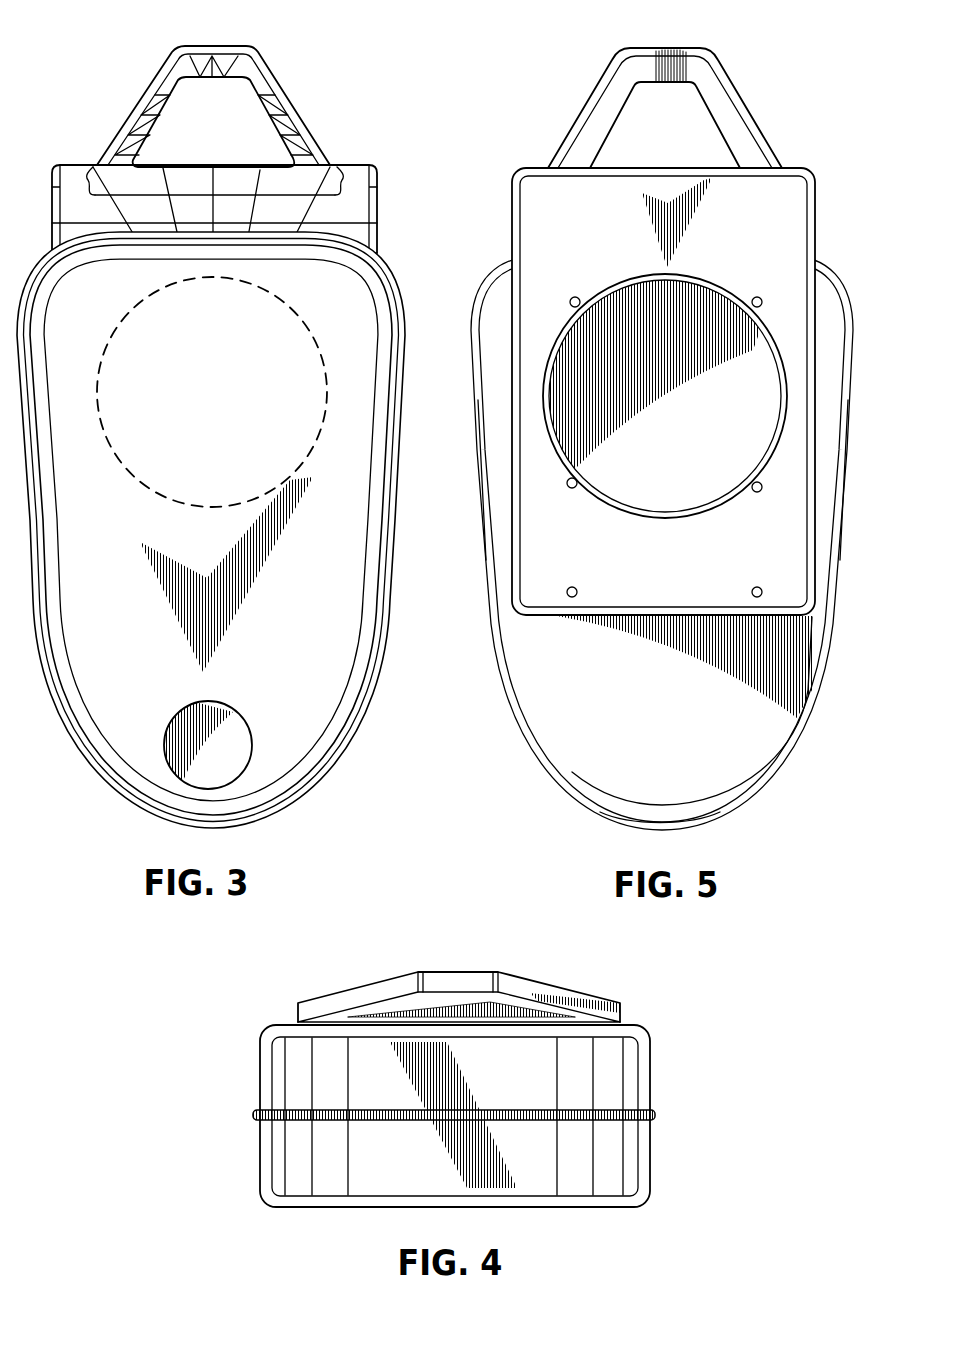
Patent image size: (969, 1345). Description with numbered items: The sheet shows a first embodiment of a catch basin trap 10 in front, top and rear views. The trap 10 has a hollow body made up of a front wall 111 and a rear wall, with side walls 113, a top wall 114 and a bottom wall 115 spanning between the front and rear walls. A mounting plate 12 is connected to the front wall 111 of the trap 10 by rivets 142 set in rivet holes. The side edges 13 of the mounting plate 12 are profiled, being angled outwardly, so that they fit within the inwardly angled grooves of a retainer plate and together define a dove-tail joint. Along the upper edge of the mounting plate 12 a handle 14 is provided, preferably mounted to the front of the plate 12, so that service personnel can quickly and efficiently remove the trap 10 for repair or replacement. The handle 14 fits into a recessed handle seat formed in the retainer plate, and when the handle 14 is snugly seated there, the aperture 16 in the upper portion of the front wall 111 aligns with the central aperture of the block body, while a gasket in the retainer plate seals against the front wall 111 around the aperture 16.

In FIG. 5, the catch basin trap 10 is at (590, 745).
In FIG. 5, the mounting plate 12 is at (627, 547).
In FIG. 5, the side edges 13 is at (510, 218).
In FIG. 3, the handle 14 is at (280, 84).
In FIG. 5, the handle 14 is at (705, 63).
In FIG. 4, the handle 14 is at (482, 973).
In FIG. 5, the aperture 16 is at (683, 428).
In FIG. 5, the front wall 111 is at (687, 722).
In FIG. 5, the side walls 113 is at (495, 650).
In FIG. 5, the top wall 114 is at (847, 292).
In FIG. 4, the top wall 114 is at (630, 1150).
In FIG. 3, the bottom wall 115 is at (225, 829).
In FIG. 5, the bottom wall 115 is at (692, 827).
In FIG. 5, the rivets 142 is at (570, 299).